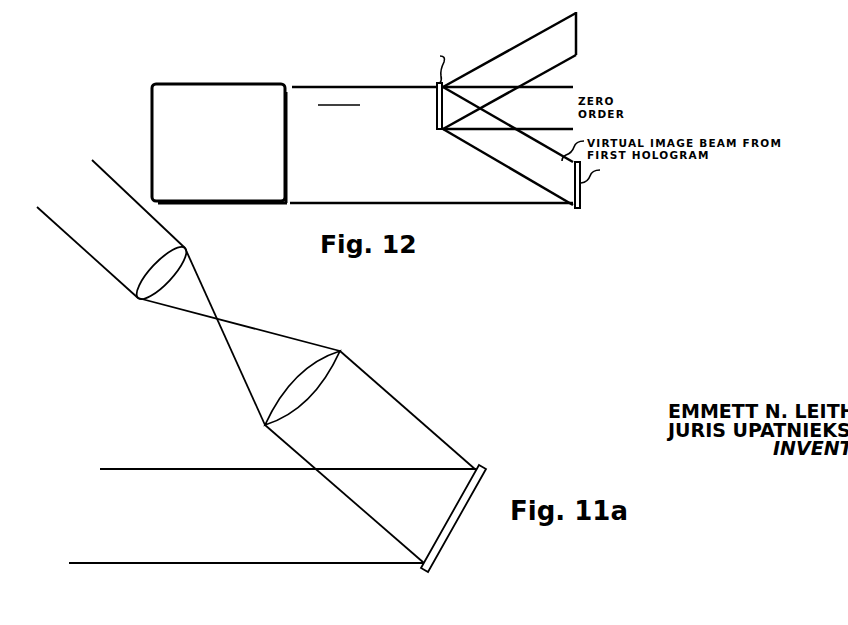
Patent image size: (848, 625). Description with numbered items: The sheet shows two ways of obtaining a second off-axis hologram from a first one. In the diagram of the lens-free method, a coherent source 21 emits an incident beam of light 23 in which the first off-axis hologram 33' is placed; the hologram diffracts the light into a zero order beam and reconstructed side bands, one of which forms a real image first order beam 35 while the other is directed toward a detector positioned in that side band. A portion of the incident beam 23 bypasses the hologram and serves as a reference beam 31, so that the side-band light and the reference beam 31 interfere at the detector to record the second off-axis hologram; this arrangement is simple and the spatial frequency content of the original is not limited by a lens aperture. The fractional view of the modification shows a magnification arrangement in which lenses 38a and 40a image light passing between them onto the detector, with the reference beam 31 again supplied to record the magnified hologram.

In FIG. 12, the coherent source 21 is at (251, 85).
In FIG. 12, the incident beam of light 23 is at (340, 85).
In FIG. 12, the first off-axis hologram 33' is at (396, 90).
In FIG. 12, the real image first order beam 35 is at (562, 27).
In FIG. 12, the reference beam 31 is at (425, 205).
In FIG. 11A, the reference beam 31 is at (247, 563).
In FIG. 11A, the lens 38a is at (156, 259).
In FIG. 11A, the lens 40a is at (316, 390).